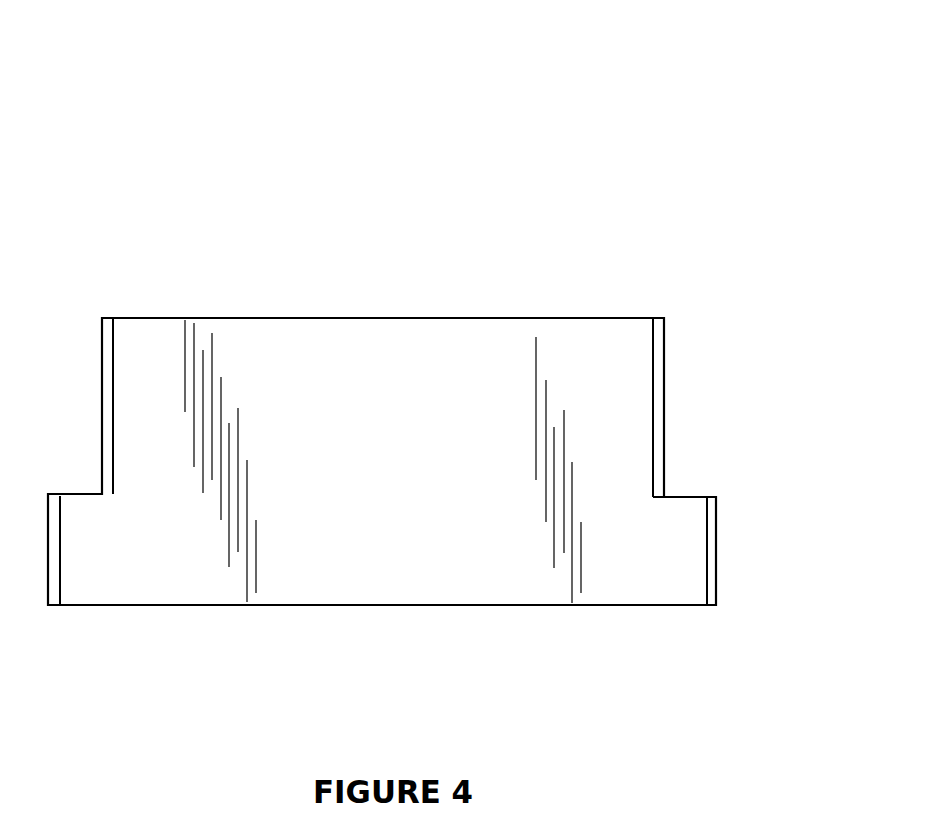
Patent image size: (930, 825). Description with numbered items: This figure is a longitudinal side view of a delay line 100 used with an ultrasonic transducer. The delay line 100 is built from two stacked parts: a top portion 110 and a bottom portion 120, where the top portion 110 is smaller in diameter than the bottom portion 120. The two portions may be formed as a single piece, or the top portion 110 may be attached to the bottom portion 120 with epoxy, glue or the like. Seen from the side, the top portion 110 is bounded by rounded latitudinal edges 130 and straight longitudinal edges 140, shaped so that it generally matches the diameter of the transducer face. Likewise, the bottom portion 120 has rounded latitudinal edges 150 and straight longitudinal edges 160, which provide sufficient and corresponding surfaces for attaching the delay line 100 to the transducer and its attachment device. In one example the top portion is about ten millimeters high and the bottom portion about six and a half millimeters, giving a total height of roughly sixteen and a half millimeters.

The delay line 100 is at (420, 362).
The top portion 110 is at (152, 338).
The bottom portion 120 is at (682, 520).
The rounded latitudinal edges 130 is at (658, 367).
The straight longitudinal edges 140 is at (510, 318).
The rounded latitudinal edges 150 is at (712, 554).
The straight longitudinal edges 160 is at (505, 605).